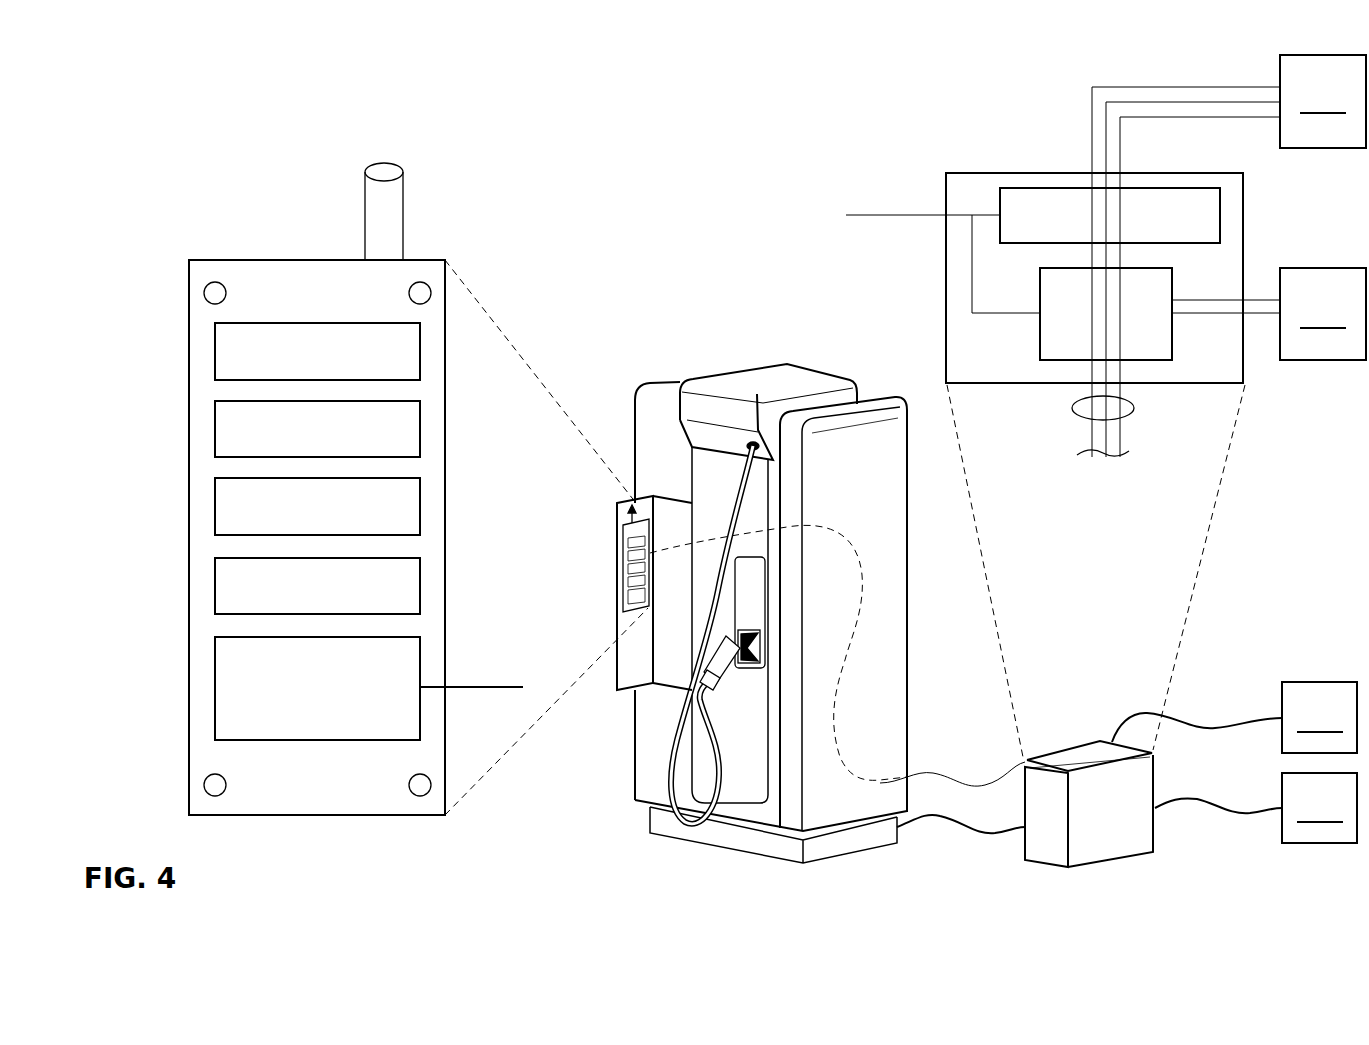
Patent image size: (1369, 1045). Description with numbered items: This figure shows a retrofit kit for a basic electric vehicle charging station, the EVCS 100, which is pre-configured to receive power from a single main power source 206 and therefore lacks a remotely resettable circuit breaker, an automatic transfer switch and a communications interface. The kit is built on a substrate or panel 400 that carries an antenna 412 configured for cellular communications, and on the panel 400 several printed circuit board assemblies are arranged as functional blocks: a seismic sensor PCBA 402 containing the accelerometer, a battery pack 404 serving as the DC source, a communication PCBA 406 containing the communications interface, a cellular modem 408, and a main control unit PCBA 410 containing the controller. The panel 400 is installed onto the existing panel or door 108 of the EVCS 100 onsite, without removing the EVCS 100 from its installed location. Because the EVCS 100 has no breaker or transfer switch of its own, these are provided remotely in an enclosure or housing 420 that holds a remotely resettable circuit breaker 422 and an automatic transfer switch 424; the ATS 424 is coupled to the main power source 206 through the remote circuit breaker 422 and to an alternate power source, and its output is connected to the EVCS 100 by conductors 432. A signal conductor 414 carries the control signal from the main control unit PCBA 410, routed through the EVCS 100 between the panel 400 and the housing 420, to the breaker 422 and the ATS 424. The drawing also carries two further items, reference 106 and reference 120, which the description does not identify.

The EVCS 100 is at (734, 558).
The charging station housing 106 is at (668, 753).
The panel 108 is at (628, 667).
The utility power source 120 is at (1260, 555).
The main power source 206 is at (1239, 404).
The panel 400 is at (228, 258).
The seismic sensor PCBA 402 is at (215, 346).
The battery pack 404 is at (215, 420).
The communication PCBA 406 is at (215, 499).
The cellular modem 408 is at (215, 577).
The main control unit PCBA 410 is at (215, 655).
The antenna 412 is at (365, 203).
The signal conductor 414 is at (497, 685).
The housing 420 is at (982, 171).
The remote circuit breaker 422 is at (1221, 203).
The automatic transfer switch 424 is at (1157, 362).
The conductors 432 is at (1072, 408).